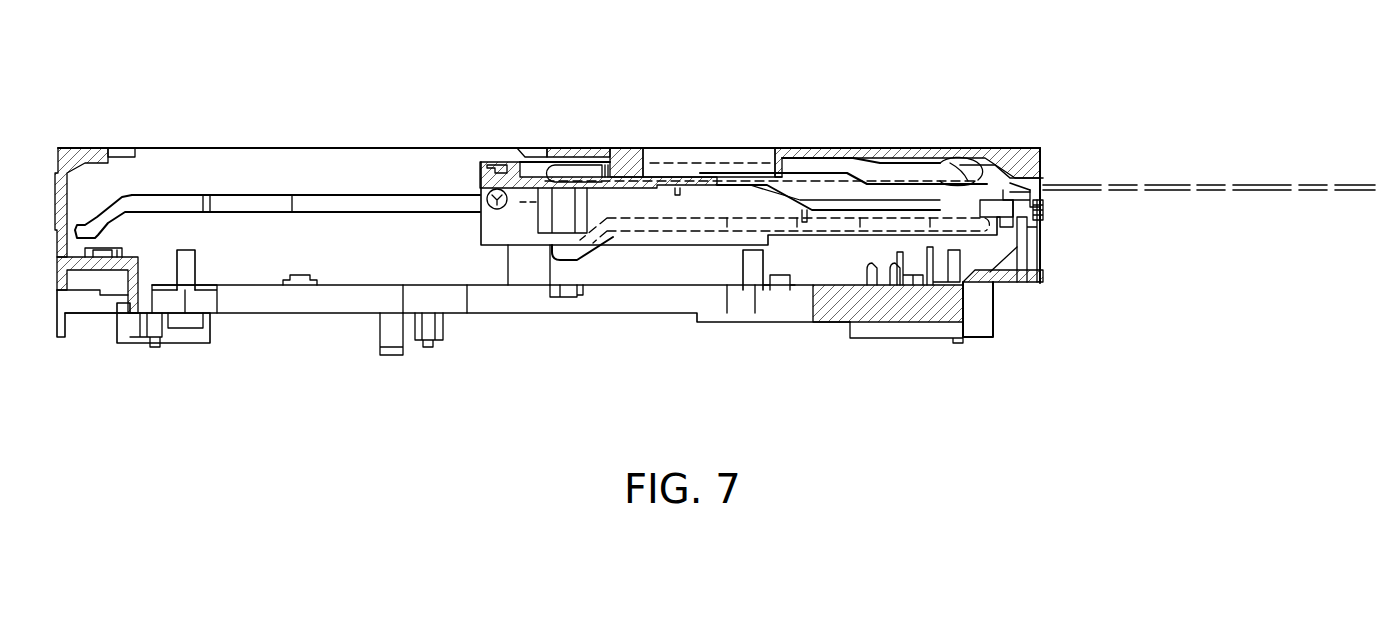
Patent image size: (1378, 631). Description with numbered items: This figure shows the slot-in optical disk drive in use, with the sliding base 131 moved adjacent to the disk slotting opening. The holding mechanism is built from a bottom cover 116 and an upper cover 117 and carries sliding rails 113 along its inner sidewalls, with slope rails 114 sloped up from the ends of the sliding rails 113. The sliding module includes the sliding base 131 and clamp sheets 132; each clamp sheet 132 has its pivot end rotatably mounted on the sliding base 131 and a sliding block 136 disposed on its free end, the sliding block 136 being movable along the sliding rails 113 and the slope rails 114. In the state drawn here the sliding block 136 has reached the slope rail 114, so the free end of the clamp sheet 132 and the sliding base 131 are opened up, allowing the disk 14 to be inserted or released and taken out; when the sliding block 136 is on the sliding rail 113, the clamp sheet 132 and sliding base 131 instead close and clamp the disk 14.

The disk 14 is at (1168, 184).
The sliding rails 113 is at (710, 148).
The slope rails 114 is at (970, 160).
The bottom cover 116 is at (1007, 285).
The upper cover 117 is at (995, 165).
The sliding base 131 is at (500, 162).
The clamp sheets 132 is at (880, 160).
The sliding block 136 is at (940, 163).